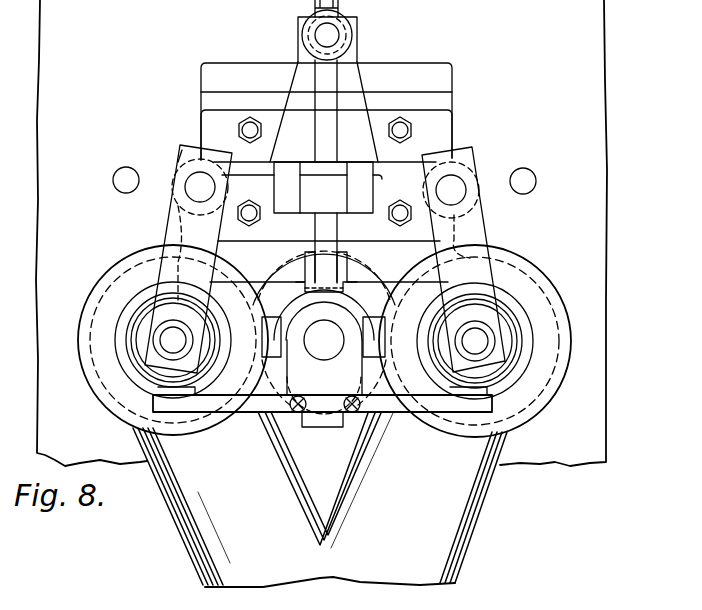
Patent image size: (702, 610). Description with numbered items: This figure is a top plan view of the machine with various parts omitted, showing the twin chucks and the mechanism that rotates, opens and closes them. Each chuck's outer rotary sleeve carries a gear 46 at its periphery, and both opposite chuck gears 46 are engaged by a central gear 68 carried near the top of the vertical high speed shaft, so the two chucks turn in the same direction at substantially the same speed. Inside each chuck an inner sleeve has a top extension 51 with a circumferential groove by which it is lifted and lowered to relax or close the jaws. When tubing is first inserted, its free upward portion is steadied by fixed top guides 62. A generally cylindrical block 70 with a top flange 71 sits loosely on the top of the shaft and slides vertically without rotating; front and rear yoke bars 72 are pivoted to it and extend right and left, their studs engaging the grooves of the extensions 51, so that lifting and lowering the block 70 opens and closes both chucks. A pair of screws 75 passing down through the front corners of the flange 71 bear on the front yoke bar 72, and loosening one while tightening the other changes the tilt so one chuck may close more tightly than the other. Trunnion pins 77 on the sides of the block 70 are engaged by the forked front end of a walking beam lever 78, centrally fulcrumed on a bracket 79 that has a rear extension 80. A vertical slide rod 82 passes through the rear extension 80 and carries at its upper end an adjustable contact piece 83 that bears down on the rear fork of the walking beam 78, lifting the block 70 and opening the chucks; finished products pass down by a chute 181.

The gear 46 is at (108, 383).
The extension 51 is at (128, 340).
The fixed top guides 62 is at (485, 312).
The central gear 68 is at (262, 298).
The cylindrical block 70 is at (303, 357).
The top flange 71 is at (295, 385).
The yoke bars 72 is at (388, 273).
The screws 75 is at (352, 413).
The trunnion pins 77 is at (367, 330).
The walking beam lever 78 is at (318, 228).
The bracket 79 is at (400, 197).
The rear extension 80 is at (324, 171).
The slide rod 82 is at (340, 34).
The contact piece 83 is at (312, 34).
The chute 181 is at (320, 499).